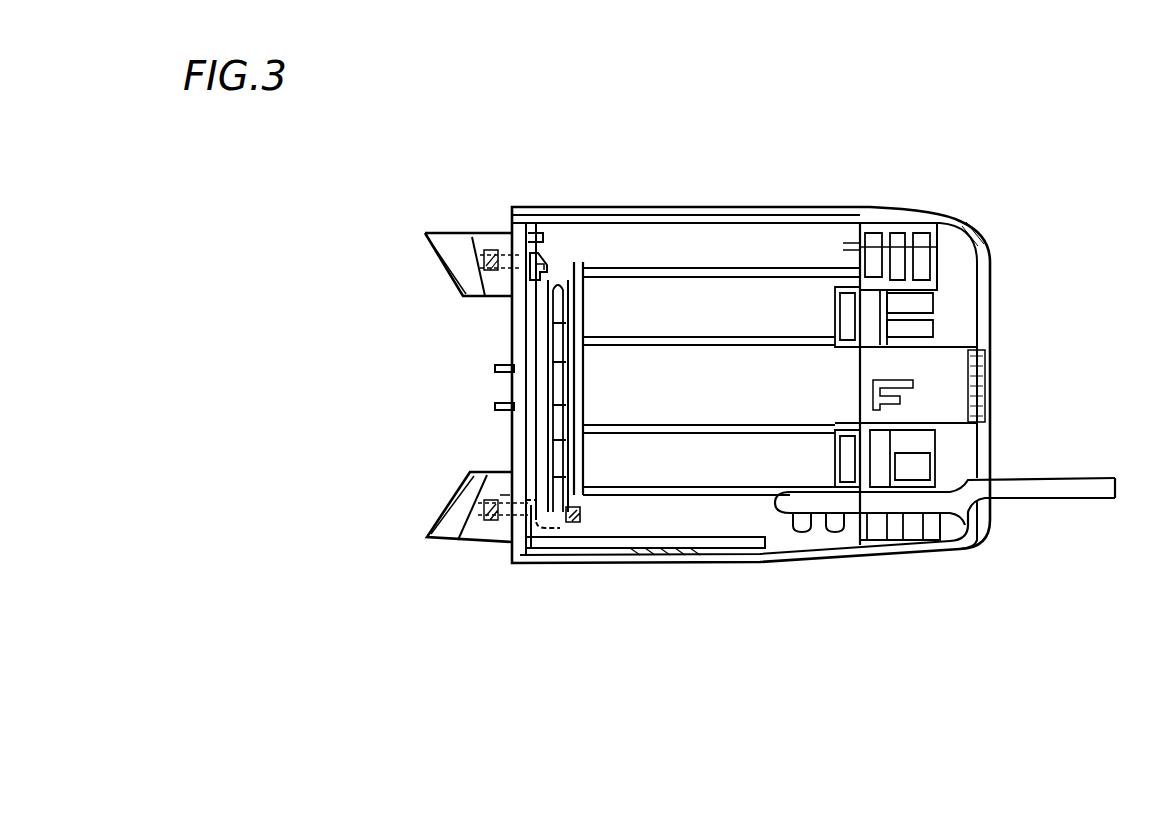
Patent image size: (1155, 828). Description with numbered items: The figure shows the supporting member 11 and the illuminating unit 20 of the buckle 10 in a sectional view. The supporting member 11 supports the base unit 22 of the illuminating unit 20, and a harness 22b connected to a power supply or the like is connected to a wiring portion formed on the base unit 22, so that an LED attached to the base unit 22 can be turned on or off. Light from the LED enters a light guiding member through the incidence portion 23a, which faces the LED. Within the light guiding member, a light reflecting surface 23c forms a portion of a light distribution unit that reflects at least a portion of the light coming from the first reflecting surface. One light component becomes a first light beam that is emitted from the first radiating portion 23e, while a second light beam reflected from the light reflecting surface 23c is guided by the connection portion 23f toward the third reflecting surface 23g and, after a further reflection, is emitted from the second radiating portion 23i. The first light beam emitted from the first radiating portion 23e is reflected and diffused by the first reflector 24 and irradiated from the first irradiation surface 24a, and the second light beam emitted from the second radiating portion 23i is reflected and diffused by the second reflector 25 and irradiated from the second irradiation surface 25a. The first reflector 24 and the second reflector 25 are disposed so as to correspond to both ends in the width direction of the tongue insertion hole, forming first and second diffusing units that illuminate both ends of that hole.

The buckle 10 is at (1042, 131).
The supporting member 11 is at (773, 240).
The illuminating unit 20 is at (467, 612).
The base unit 22 is at (648, 520).
The harness 22b is at (800, 517).
The incidence portion 23a is at (585, 530).
The light reflecting surface 23c is at (540, 530).
The first radiating portion 23e is at (477, 507).
The connection portion 23f is at (540, 432).
The third reflecting surface 23g is at (545, 262).
The second radiating portion 23i is at (480, 258).
The first reflector 24 is at (416, 545).
The first irradiation surface 24a is at (445, 514).
The second reflector 25 is at (440, 282).
The second irradiation surface 25a is at (455, 268).